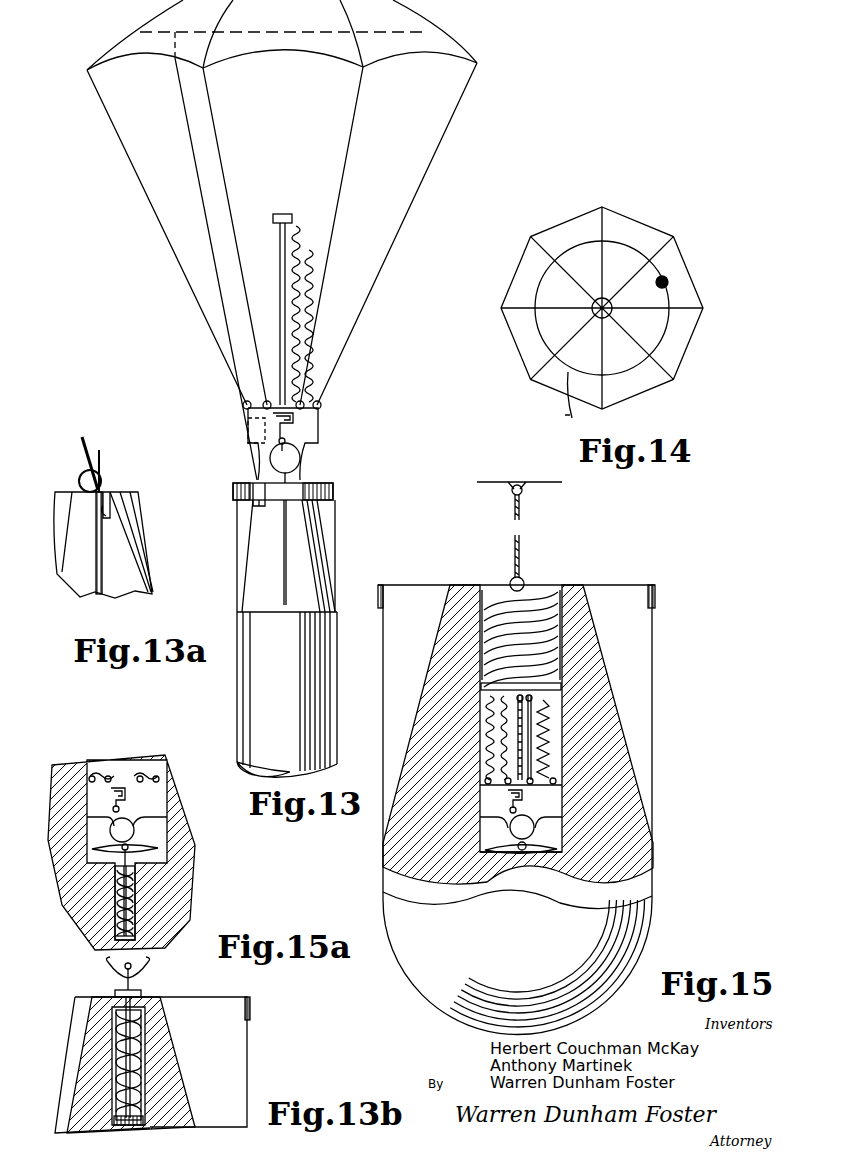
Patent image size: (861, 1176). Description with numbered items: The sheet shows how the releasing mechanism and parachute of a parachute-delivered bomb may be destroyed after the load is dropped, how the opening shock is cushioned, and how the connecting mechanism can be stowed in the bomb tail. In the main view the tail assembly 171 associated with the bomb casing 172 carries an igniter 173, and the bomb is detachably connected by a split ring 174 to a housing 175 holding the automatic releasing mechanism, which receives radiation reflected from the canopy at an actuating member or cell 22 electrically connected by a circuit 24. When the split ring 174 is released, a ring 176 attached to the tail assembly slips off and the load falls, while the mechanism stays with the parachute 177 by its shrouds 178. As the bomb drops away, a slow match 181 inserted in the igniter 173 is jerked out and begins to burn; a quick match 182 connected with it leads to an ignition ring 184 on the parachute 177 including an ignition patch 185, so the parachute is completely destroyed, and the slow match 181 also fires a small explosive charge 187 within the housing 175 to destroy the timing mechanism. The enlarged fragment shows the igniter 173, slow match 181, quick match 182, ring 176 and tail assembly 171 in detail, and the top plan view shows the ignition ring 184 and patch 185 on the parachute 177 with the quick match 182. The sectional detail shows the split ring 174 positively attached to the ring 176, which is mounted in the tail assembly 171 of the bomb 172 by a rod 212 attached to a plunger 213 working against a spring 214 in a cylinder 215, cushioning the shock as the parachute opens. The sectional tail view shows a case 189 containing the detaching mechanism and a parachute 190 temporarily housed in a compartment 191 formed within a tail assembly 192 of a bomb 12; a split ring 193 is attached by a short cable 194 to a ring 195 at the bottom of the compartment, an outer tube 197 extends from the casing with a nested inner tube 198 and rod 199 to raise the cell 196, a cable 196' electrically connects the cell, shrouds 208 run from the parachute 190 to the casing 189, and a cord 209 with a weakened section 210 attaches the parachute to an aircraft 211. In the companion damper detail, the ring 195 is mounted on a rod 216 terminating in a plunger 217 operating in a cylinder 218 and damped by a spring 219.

In FIG. 15, the bomb 12 is at (517, 962).
In FIG. 13, the actuating member or cell 22 is at (274, 217).
In FIG. 13, the circuit 24 is at (313, 260).
In FIG. 13, the tail assembly 171 is at (287, 556).
In FIG. 13A, the tail assembly 171 is at (149, 546).
In FIG. 13B, the tail assembly 171 is at (152, 1065).
In FIG. 13, the bomb casing 172 is at (287, 694).
In FIG. 13B, the bomb casing 172 is at (160, 1137).
In FIG. 13, the igniter 173 is at (250, 478).
In FIG. 13A, the igniter 173 is at (110, 512).
In FIG. 13, the split ring 174 is at (301, 460).
In FIG. 13B, the split ring 174 is at (112, 970).
In FIG. 13, the housing 175 is at (305, 428).
In FIG. 13, the ring 176 is at (291, 480).
In FIG. 13A, the ring 176 is at (79, 478).
In FIG. 13B, the ring 176 is at (136, 985).
In FIG. 13, the parachute 177 is at (282, 35).
In FIG. 14, the parachute 177 is at (602, 308).
In FIG. 13, the shrouds 178 is at (173, 252).
In FIG. 14, the shrouds 178 is at (603, 261).
In FIG. 13, the slow match 181 is at (252, 452).
In FIG. 13A, the slow match 181 is at (103, 462).
In FIG. 13, the quick match 182 is at (228, 402).
In FIG. 13A, the quick match 182 is at (84, 453).
In FIG. 14, the quick match 182 is at (566, 415).
In FIG. 13, the ignition ring 184 is at (316, 9).
In FIG. 14, the ignition ring 184 is at (540, 336).
In FIG. 14, the ignition patch 185 is at (669, 281).
In FIG. 13, the small explosive charge 187 is at (250, 421).
In FIG. 15, the case 189 is at (521, 799).
In FIG. 15A, the case 189 is at (126, 792).
In FIG. 15, the parachute 190 is at (493, 596).
In FIG. 15, the compartment 191 is at (549, 597).
In FIG. 15, the tail assembly 192 is at (516, 742).
In FIG. 15, the split ring 193 is at (495, 828).
In FIG. 15A, the split ring 193 is at (100, 838).
In FIG. 15, the short cable 194 is at (523, 833).
In FIG. 15A, the short cable 194 is at (168, 842).
In FIG. 15, the ring 195 is at (528, 852).
In FIG. 15A, the ring 195 is at (130, 860).
In FIG. 15, the cell 196 is at (418, 740).
In FIG. 15, the cable 196' is at (618, 742).
In FIG. 15, the outer tube 197 is at (562, 688).
In FIG. 15, the inner tube 198 is at (531, 745).
In FIG. 15, the rod 199 is at (523, 703).
In FIG. 15, the shrouds 208 is at (483, 740).
In FIG. 15, the cord 209 is at (523, 546).
In FIG. 15, the weakened section 210 is at (520, 506).
In FIG. 15, the aircraft 211 is at (527, 483).
In FIG. 13B, the rod 212 is at (140, 1040).
In FIG. 13B, the plunger 213 is at (142, 1120).
In FIG. 13B, the spring 214 is at (140, 1088).
In FIG. 13B, the cylinder 215 is at (140, 1065).
In FIG. 15A, the rod 216 is at (138, 916).
In FIG. 15A, the plunger 217 is at (120, 930).
In FIG. 15A, the cylinder 218 is at (120, 900).
In FIG. 15A, the spring 219 is at (138, 892).